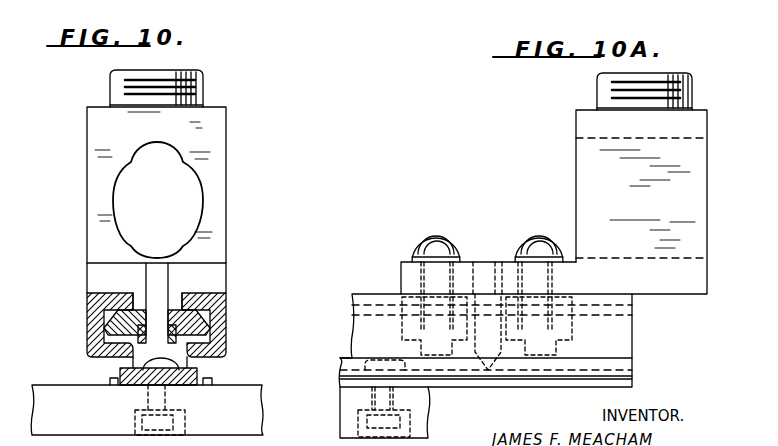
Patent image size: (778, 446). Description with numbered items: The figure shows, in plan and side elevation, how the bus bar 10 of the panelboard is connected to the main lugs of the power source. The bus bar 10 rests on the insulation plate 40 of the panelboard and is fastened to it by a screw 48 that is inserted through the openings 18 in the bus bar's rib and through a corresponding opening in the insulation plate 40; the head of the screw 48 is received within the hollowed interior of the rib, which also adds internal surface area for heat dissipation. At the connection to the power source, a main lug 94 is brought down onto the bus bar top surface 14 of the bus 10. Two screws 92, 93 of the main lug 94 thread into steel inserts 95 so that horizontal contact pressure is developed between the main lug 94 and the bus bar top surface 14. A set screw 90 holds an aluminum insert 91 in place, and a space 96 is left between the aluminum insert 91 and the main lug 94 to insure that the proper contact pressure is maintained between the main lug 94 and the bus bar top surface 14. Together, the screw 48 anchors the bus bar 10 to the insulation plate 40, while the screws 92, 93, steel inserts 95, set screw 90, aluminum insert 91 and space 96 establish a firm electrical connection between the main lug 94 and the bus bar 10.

In FIG. 10, the bus bar 10 is at (149, 227).
In FIG. 10A, the bus bar 10 is at (634, 331).
In FIG. 10A, the bus bar top surface 14 is at (372, 292).
In FIG. 10, the openings 18 is at (172, 402).
In FIG. 10A, the openings 18 is at (358, 402).
In FIG. 10, the insulation plate 40 is at (84, 416).
In FIG. 10, the screw 48 is at (190, 366).
In FIG. 10A, the set screw 90 is at (494, 294).
In FIG. 10, the aluminum insert 91 is at (210, 336).
In FIG. 10A, the screw 92 is at (437, 240).
In FIG. 10A, the screw 93 is at (541, 238).
In FIG. 10, the main lug 94 is at (218, 275).
In FIG. 10A, the main lug 94 is at (401, 278).
In FIG. 10, the steel inserts 95 is at (130, 358).
In FIG. 10A, the steel inserts 95 is at (402, 345).
In FIG. 10, the space 96 is at (138, 292).